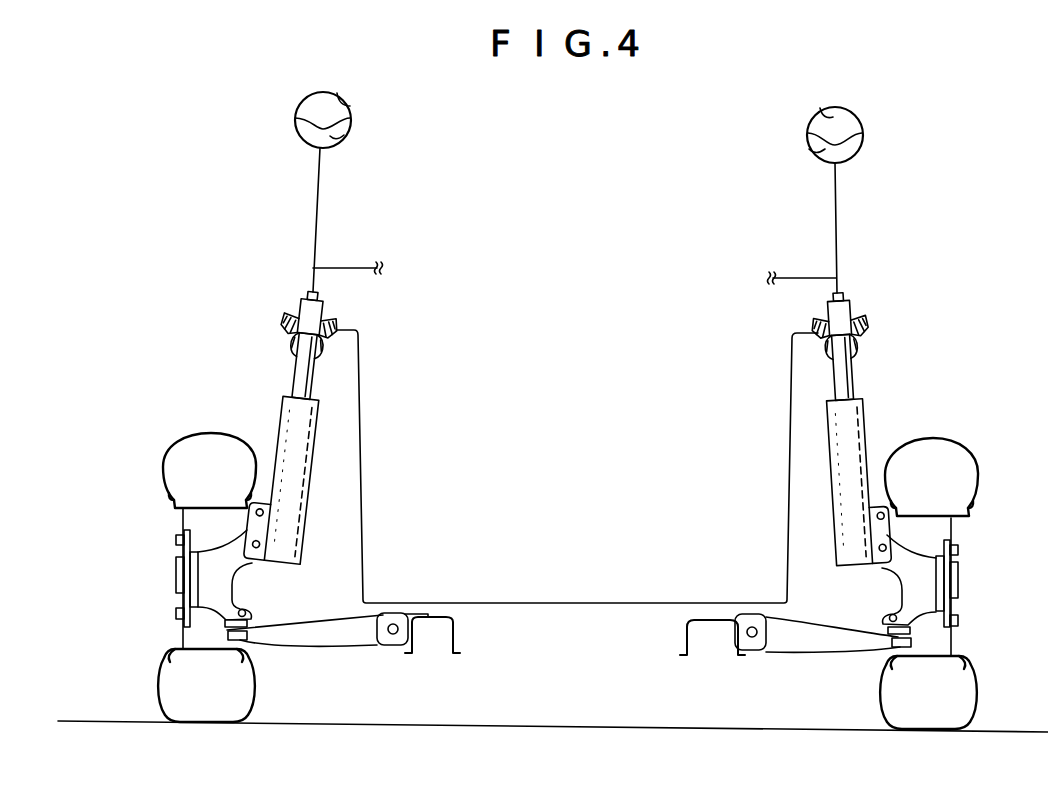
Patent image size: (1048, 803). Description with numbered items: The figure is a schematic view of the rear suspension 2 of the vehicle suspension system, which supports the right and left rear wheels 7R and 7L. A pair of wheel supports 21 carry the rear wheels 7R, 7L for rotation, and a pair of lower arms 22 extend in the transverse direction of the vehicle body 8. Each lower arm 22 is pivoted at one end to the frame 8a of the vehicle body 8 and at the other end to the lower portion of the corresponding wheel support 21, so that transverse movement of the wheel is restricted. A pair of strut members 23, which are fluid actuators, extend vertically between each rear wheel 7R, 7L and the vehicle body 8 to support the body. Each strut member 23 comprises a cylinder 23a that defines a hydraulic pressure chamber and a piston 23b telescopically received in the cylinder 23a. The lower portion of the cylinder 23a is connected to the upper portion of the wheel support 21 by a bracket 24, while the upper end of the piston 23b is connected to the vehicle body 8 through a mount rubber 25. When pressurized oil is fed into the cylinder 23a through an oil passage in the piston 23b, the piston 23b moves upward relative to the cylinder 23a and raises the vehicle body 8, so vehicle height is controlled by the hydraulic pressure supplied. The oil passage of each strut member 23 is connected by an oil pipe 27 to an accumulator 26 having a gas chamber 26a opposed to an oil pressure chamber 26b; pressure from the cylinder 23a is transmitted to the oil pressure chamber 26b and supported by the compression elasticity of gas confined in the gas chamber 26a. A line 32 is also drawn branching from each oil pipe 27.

The rear suspension 2 is at (639, 157).
The left rear wheel 7L is at (168, 448).
The right rear wheel 7R is at (979, 468).
The vehicle body 8 is at (362, 446).
The frame 8a is at (458, 635).
The wheel support 21 is at (207, 576).
The lower arm 22 is at (341, 648).
The strut member 23 is at (271, 422).
The cylinder 23a is at (316, 468).
The piston 23b is at (296, 379).
The bracket 24 is at (285, 564).
The mount rubber 25 is at (290, 313).
The accumulator 26 is at (283, 106).
The gas chamber 26a is at (350, 104).
The oil pressure chamber 26b is at (343, 141).
The oil pipe 27 is at (318, 225).
The signal line 32 is at (354, 271).